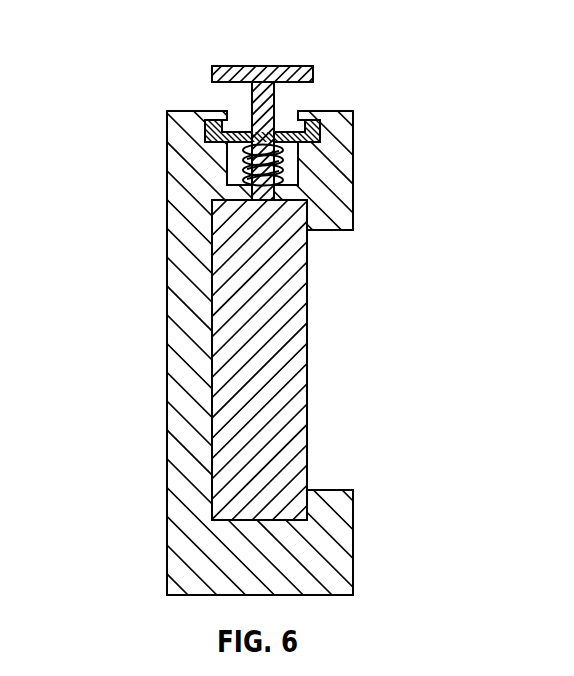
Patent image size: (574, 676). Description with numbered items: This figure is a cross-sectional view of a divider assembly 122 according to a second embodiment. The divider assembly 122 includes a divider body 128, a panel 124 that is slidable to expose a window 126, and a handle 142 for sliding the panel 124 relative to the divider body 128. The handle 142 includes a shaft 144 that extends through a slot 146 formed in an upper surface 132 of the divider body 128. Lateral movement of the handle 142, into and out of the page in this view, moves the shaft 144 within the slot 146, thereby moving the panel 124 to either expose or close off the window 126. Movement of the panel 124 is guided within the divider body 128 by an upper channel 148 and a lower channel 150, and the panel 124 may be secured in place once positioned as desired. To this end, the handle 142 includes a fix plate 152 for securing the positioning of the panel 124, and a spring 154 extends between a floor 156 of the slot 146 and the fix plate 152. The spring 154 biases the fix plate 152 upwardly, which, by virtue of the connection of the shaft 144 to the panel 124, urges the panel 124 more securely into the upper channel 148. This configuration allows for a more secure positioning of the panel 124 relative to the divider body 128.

The divider assembly 122 is at (120, 83).
The panel 124 is at (255, 403).
The window 126 is at (287, 355).
The divider body 128 is at (185, 283).
The upper surface 132 is at (195, 153).
The handle 142 is at (318, 75).
The shaft 144 is at (256, 108).
The slot 146 is at (288, 176).
The upper channel 148 is at (311, 212).
The lower channel 150 is at (308, 503).
The fix plate 152 is at (327, 131).
The spring 154 is at (288, 164).
The floor 156 is at (235, 181).